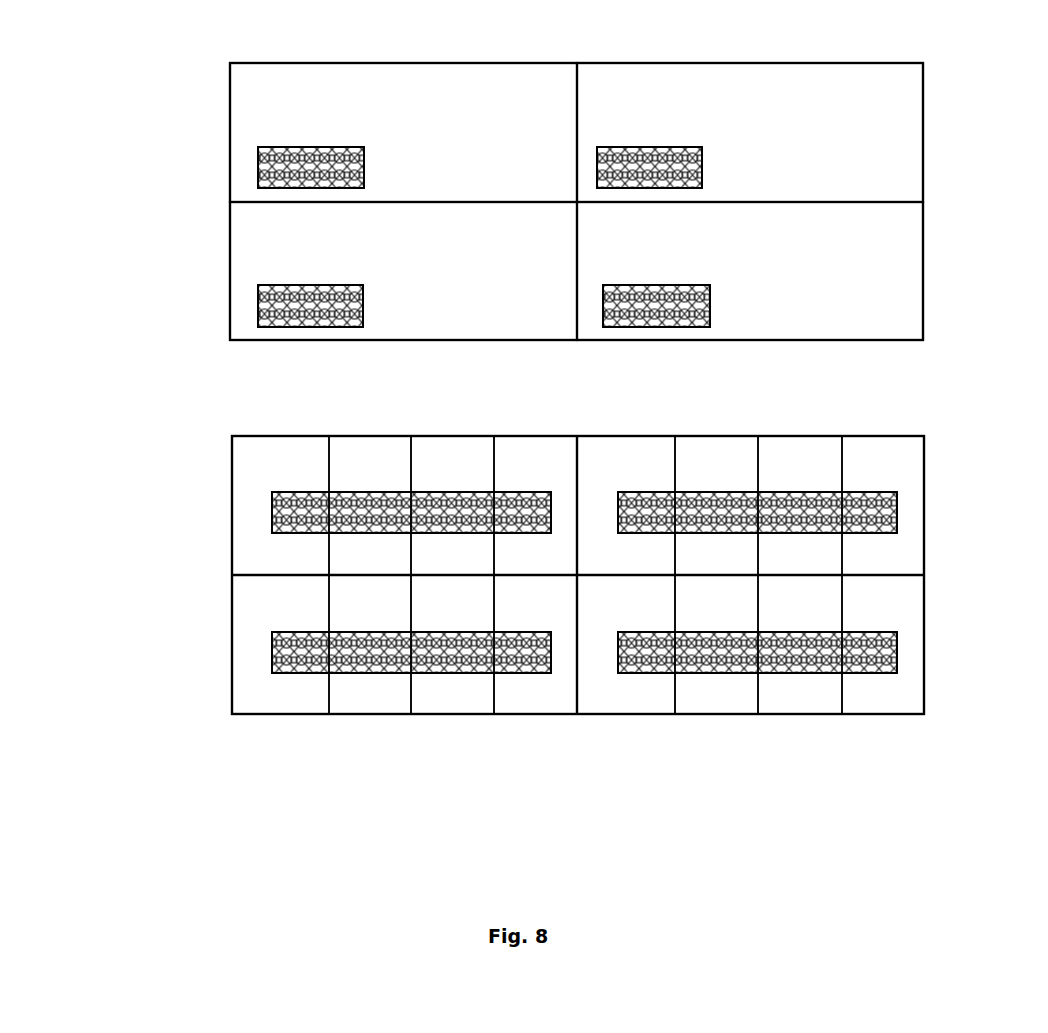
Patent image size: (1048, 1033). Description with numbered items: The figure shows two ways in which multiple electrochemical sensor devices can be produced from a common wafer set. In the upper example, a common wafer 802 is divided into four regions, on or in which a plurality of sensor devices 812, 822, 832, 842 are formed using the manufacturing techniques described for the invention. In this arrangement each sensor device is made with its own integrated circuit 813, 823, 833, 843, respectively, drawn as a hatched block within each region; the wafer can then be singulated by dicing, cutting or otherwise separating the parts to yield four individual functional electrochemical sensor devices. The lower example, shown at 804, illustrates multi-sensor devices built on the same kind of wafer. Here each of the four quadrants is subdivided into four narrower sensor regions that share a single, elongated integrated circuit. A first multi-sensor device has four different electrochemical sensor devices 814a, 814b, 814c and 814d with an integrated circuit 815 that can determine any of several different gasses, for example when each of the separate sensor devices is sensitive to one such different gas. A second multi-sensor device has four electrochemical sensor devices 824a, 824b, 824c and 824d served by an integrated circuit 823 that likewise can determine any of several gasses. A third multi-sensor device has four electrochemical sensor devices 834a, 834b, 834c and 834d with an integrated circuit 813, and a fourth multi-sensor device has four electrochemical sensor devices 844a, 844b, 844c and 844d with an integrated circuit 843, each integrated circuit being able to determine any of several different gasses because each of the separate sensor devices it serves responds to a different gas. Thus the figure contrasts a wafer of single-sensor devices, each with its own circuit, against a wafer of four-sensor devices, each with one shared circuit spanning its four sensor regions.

The common wafer 802 is at (170, 59).
The multi-sensor device embodiment 804 is at (170, 433).
The sensor device 812 is at (288, 98).
The sensor device 822 is at (619, 98).
The sensor device 832 is at (275, 237).
The sensor device 842 is at (632, 237).
The integrated circuit 813 is at (256, 179).
The integrated circuit 823 is at (707, 156).
The integrated circuit 833 is at (256, 318).
The integrated circuit 843 is at (713, 302).
The integrated circuit 815 is at (269, 523).
The electrochemical sensor device 814a is at (292, 472).
The electrochemical sensor device 814b is at (391, 472).
The electrochemical sensor device 814c is at (471, 472).
The electrochemical sensor device 814d is at (555, 472).
The electrochemical sensor device 824a is at (636, 472).
The electrochemical sensor device 824b is at (737, 472).
The electrochemical sensor device 824c is at (818, 472).
The electrochemical sensor device 824d is at (902, 472).
The electrochemical sensor device 834a is at (291, 613).
The electrochemical sensor device 834b is at (390, 613).
The electrochemical sensor device 834c is at (471, 613).
The electrochemical sensor device 834d is at (555, 613).
The electrochemical sensor device 844a is at (636, 613).
The electrochemical sensor device 844b is at (737, 613).
The electrochemical sensor device 844c is at (818, 613).
The electrochemical sensor device 844d is at (902, 613).